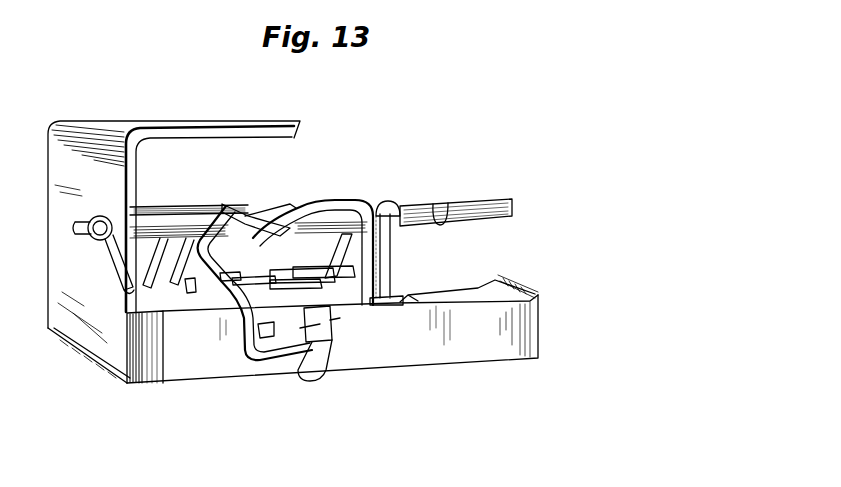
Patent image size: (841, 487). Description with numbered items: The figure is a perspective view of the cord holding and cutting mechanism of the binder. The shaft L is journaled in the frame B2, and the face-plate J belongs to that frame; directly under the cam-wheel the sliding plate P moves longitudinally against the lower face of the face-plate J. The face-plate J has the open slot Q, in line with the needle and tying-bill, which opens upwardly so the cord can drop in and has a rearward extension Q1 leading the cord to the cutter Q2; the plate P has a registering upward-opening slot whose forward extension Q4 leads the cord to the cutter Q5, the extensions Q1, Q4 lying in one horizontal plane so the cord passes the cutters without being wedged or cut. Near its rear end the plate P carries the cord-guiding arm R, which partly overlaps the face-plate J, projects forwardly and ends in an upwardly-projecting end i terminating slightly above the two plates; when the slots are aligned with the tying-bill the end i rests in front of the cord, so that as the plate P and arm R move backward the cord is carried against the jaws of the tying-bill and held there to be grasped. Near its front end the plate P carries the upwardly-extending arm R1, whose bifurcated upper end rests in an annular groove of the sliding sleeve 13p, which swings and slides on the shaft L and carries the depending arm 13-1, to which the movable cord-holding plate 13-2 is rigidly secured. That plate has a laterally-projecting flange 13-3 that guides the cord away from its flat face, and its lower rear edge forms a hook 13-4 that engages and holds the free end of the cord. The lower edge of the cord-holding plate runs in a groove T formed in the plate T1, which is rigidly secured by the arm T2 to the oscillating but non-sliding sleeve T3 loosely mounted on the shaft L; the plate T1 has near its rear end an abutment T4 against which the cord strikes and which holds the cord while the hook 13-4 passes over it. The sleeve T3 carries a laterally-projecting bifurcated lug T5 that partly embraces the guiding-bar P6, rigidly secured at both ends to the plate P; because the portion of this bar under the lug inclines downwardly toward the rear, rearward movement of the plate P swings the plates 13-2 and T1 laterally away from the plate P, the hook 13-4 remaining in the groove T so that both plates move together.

The frame B2 is at (165, 126).
The face-plate J is at (120, 277).
The oscillating non-sliding sleeve T3 is at (206, 207).
The arm T2 is at (153, 272).
The plate T1 is at (183, 273).
The bifurcated lug T5 is at (262, 212).
The guiding-bar P6 is at (334, 202).
The upwardly-extending arm R1 is at (392, 258).
The sliding sleeve 13p is at (382, 202).
The shaft L is at (456, 204).
The laterally-projecting flange 13-3 is at (308, 260).
The movable cord-holding plate 13-2 is at (324, 282).
The depending arm 13-1 is at (319, 281).
The groove T is at (260, 276).
The abutment T4 is at (227, 275).
The cord-guiding arm R is at (242, 330).
The upwardly-projecting end i is at (333, 322).
The forward extension Q4 is at (320, 312).
The open slot Q is at (318, 312).
The rearward extension Q1 is at (282, 323).
The cutter Q5 is at (334, 334).
The cutter Q2 is at (290, 320).
The hook 13-4 is at (284, 296).
The sliding plate P is at (445, 289).